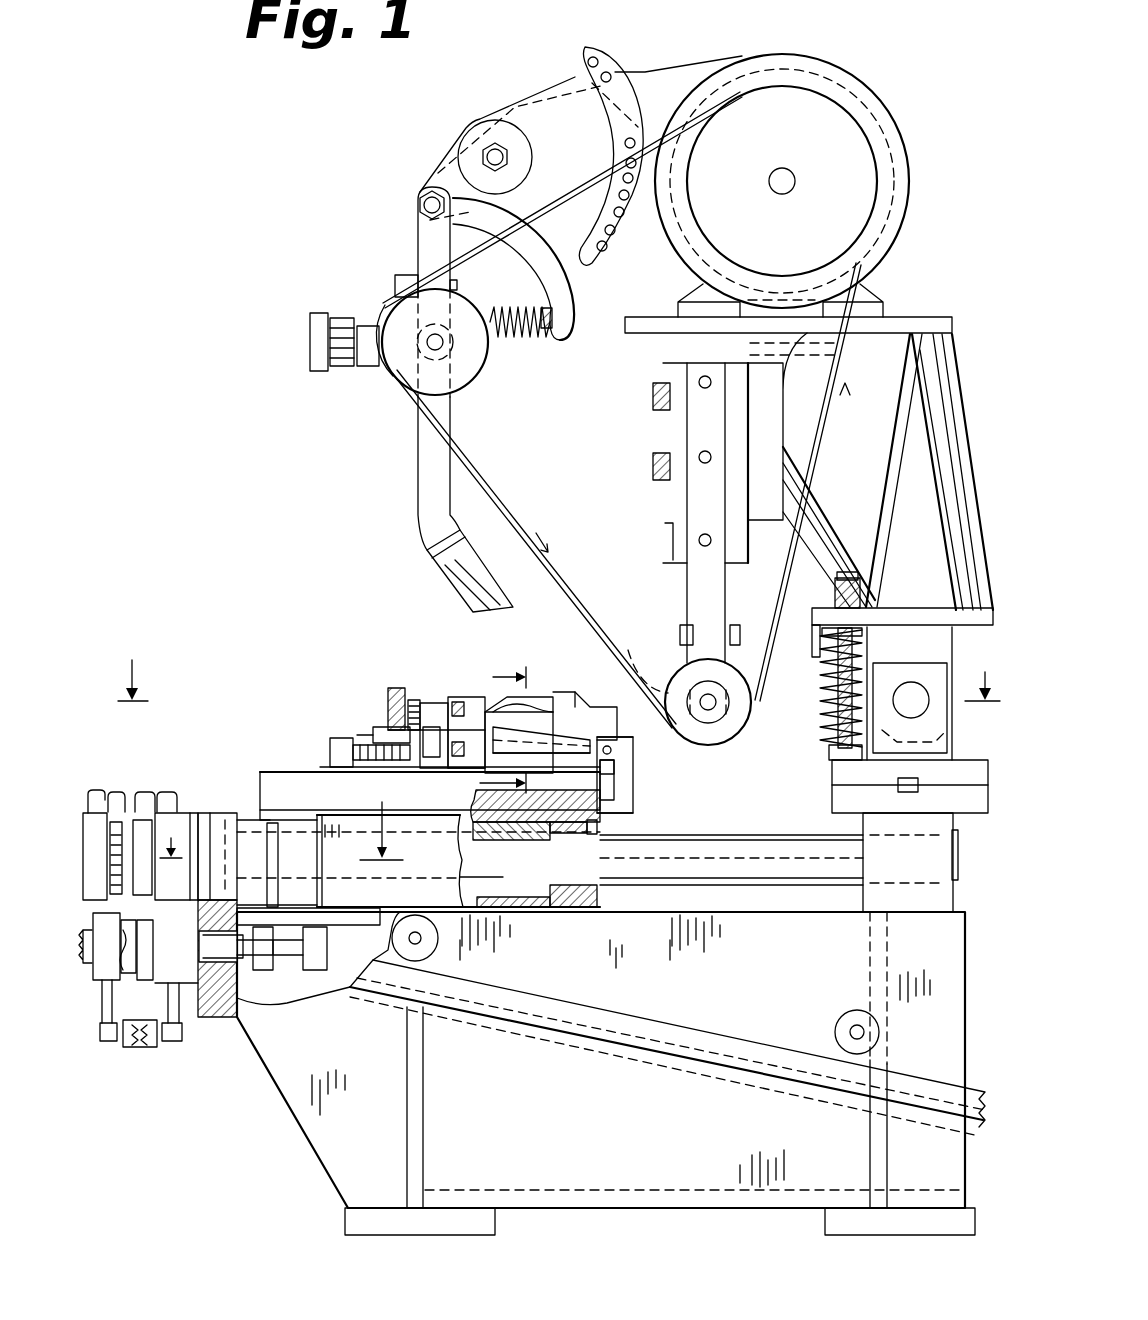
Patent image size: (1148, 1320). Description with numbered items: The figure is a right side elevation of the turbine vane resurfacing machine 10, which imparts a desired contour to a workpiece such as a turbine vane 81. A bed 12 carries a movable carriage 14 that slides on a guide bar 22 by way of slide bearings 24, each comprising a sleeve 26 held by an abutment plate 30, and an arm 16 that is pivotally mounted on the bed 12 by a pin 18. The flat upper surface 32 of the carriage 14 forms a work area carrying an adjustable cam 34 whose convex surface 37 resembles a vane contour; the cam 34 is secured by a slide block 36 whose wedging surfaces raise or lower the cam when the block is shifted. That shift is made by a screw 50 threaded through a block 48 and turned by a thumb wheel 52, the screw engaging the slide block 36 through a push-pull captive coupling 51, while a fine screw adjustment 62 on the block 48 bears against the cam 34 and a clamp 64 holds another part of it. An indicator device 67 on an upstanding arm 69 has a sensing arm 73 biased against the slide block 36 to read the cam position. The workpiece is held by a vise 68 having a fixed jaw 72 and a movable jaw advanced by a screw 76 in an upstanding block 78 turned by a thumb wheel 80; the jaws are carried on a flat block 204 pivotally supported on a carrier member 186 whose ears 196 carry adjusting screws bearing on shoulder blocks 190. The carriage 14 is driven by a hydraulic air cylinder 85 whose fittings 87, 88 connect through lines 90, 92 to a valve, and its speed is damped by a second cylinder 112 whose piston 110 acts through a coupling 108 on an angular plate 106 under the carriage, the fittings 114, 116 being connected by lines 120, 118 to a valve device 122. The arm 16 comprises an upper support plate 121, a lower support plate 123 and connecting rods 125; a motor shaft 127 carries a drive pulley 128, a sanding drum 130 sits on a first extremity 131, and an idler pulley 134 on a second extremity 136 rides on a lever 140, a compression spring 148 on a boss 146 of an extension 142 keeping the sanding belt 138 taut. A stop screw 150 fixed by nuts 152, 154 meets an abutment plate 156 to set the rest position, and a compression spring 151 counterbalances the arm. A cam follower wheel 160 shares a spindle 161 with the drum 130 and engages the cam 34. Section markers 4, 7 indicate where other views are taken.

The resurfacing machine 10 is at (257, 419).
The bed 12 is at (325, 1148).
The carriage 14 is at (262, 782).
The arm 16 is at (965, 390).
The pin 18 is at (918, 708).
The guide bar 22 is at (798, 842).
The slide bearing 24 is at (262, 815).
The sleeve 26 is at (568, 832).
The abutment plate 30 is at (595, 826).
The upper surface 32 is at (288, 770).
The adjustable cam 34 is at (541, 731).
The slide block 36 is at (515, 748).
The convex surface 37 is at (540, 715).
The block 48 is at (425, 700).
The screw 50 is at (403, 770).
The push-pull captive coupling 51 is at (477, 773).
The thumb wheel 52 is at (363, 767).
The fine screw adjustment 62 is at (463, 700).
The clamp 64 is at (633, 796).
The indicator device 67 is at (372, 728).
The vise 68 is at (578, 694).
The upstanding arm 69 is at (430, 758).
The fixed jaw 72 is at (590, 707).
The sensing arm 73 is at (500, 710).
The advanceable screw 76 is at (410, 700).
The upstanding block 78 is at (430, 703).
The thumb wheel 80 is at (388, 700).
The turbine vane 81 is at (532, 700).
The hydraulic air cylinder 85 is at (184, 818).
The fitting 87 is at (170, 790).
The fitting 88 is at (90, 790).
The hydraulic line 90 is at (145, 790).
The hydraulic line 92 is at (115, 790).
The angular plate 106 is at (286, 958).
The second coupling 108 is at (262, 972).
The piston 110 is at (205, 947).
The second cylinder 112 is at (184, 987).
The fitting 114 is at (170, 1044).
The fitting 116 is at (107, 1046).
The line 118 is at (110, 1000).
The line 120 is at (171, 988).
The upper support plate 121 is at (922, 318).
The valve device 122 is at (130, 1056).
The lower support plate 123 is at (905, 610).
The connecting rods 125 is at (955, 476).
The shaft 127 is at (790, 168).
The drive pulley 128 is at (805, 242).
The sanding drum 130 is at (644, 658).
The first extremity 131 is at (690, 586).
The idler pulley 134 is at (470, 375).
The second extremity 136 is at (524, 106).
The sanding belt 138 is at (480, 484).
The lever 140 is at (416, 456).
The extension 142 is at (566, 298).
The boss 146 is at (547, 336).
The compression spring 148 is at (516, 310).
The screw 150 is at (826, 680).
The compression spring 151 is at (830, 708).
The nut 152 is at (863, 596).
The nut 154 is at (826, 638).
The abutment plate 156 is at (828, 755).
The cam follower wheel 160 is at (714, 738).
The spindle 161 is at (720, 697).
The carrier member 186 is at (630, 755).
The shoulder blocks 190 is at (640, 810).
The ears 196 is at (633, 768).
The flat block 204 is at (620, 738).
The section line 4- 4 is at (558, 663).
The section line 7- 7 is at (281, 818).